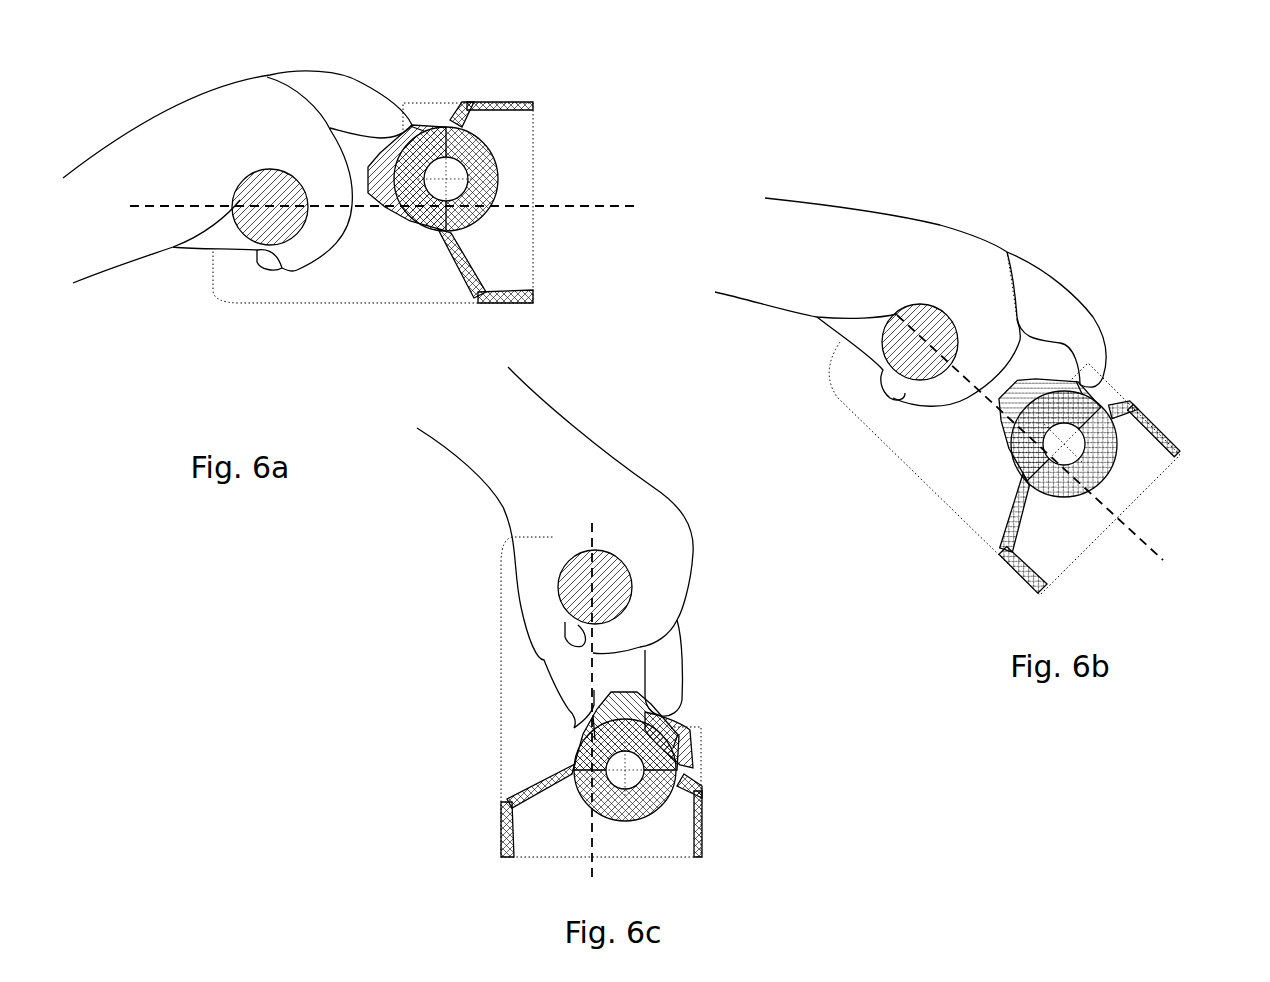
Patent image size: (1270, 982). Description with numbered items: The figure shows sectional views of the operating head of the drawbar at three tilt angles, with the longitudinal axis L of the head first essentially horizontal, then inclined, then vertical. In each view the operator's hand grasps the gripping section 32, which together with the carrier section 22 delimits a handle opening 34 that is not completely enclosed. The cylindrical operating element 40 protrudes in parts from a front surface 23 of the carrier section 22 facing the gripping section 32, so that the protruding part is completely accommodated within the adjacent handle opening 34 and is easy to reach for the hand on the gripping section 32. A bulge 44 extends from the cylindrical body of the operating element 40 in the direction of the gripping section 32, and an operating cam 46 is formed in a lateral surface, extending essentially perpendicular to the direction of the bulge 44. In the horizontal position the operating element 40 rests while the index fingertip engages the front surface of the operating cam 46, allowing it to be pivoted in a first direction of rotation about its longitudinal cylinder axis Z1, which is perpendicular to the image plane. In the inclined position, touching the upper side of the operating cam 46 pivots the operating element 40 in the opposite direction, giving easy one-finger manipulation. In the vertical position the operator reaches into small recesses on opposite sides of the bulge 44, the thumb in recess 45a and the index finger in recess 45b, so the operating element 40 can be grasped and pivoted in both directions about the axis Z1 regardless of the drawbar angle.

In FIG. 6A, the carrier section 22 is at (520, 103).
In FIG. 6B, the carrier section 22 is at (1148, 425).
In FIG. 6C, the carrier section 22 is at (705, 793).
In FIG. 6A, the front surface 23 is at (440, 240).
In FIG. 6B, the front surface 23 is at (1015, 515).
In FIG. 6C, the front surface 23 is at (560, 763).
In FIG. 6A, the gripping section 32 is at (250, 226).
In FIG. 6B, the gripping section 32 is at (908, 352).
In FIG. 6C, the gripping section 32 is at (570, 595).
In FIG. 6A, the handle opening 34 is at (373, 203).
In FIG. 6B, the handle opening 34 is at (1004, 468).
In FIG. 6C, the handle opening 34 is at (692, 620).
In FIG. 6A, the operating element 40 is at (477, 158).
In FIG. 6B, the operating element 40 is at (1083, 477).
In FIG. 6C, the operating element 40 is at (660, 792).
In FIG. 6A, the bulge 44 is at (383, 190).
In FIG. 6B, the bulge 44 is at (1024, 390).
In FIG. 6C, the bulge 44 is at (623, 705).
In FIG. 6C, the recess 45a is at (593, 713).
In FIG. 6C, the recess 45b is at (645, 712).
In FIG. 6A, the operating cam 46 is at (412, 125).
In FIG. 6B, the operating cam 46 is at (1080, 385).
In FIG. 6C, the operating cam 46 is at (675, 741).
In FIG. 6A, the longitudinal cylinder axis Z1 is at (450, 181).
In FIG. 6B, the longitudinal cylinder axis Z1 is at (1065, 447).
In FIG. 6C, the longitudinal cylinder axis Z1 is at (617, 763).
In FIG. 6A, the longitudinal axis L is at (387, 189).
In FIG. 6B, the longitudinal axis L is at (1043, 447).
In FIG. 6C, the longitudinal axis L is at (578, 709).